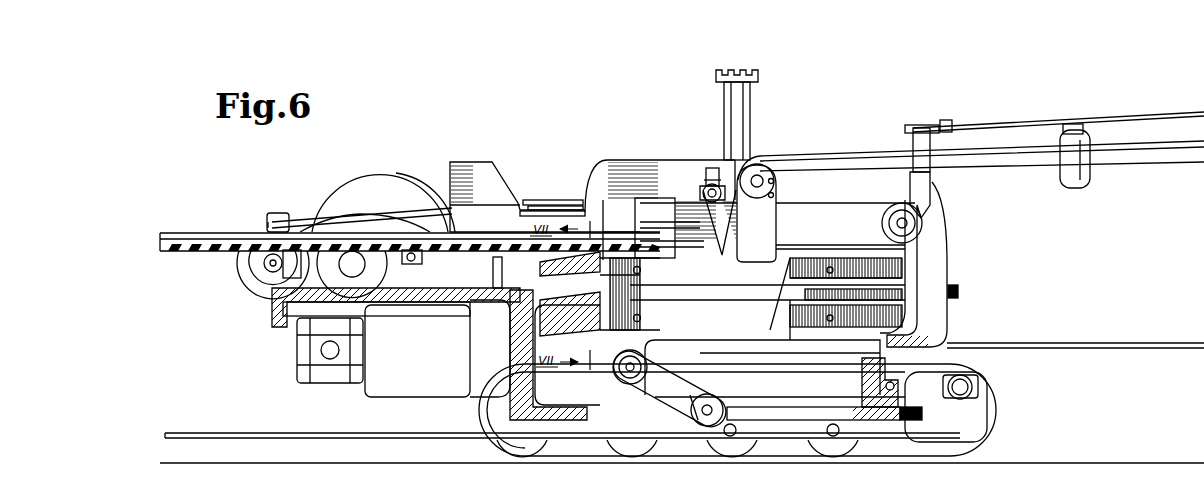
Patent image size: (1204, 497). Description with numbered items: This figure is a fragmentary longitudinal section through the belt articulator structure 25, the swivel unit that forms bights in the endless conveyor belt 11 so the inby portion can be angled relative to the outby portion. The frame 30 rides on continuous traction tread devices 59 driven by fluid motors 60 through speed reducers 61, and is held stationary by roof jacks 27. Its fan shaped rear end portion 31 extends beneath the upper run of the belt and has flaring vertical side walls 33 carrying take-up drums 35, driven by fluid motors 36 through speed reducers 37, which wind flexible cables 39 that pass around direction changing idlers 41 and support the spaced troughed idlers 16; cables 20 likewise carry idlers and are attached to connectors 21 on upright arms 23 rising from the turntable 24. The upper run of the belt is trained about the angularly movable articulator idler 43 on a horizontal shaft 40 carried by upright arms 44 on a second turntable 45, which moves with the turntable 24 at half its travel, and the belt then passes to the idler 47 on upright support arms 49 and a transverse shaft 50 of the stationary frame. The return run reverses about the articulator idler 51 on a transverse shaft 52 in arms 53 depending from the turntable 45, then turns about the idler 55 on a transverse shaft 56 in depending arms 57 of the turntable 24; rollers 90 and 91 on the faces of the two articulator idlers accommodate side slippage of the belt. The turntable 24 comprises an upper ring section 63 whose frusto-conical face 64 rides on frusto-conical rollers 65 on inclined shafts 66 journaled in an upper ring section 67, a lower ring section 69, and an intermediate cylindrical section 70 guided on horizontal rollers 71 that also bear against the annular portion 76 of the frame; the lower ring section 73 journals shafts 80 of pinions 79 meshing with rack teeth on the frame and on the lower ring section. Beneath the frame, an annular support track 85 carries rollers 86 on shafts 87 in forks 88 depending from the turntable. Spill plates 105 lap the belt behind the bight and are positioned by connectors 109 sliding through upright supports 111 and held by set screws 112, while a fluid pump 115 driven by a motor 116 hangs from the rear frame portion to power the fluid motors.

The endless conveyor belt 11 is at (1198, 163).
The troughed idlers 16 is at (1072, 190).
The cables 20 is at (993, 124).
The connectors 21 is at (914, 128).
The upright arms 23 is at (944, 218).
The turntable 24 is at (611, 340).
The belt articulator structure 25 is at (440, 158).
The roof jacks 27 is at (724, 103).
The frame 30 is at (961, 292).
The fan shaped rear end portion 31 is at (276, 310).
The flaring vertical side walls 33 is at (282, 213).
The take-up drums 35 is at (338, 205).
The fluid motors 36 is at (250, 265).
The speed reducers 37 is at (390, 266).
The flexible cables 39 is at (193, 232).
The horizontal shaft 40 is at (760, 180).
The direction changing idlers 41 is at (533, 200).
The articulator idler 43 is at (759, 165).
The upright arms 44 is at (760, 212).
The turntable 45 is at (903, 268).
The idler 47 is at (931, 207).
The upright support arms 49 is at (908, 238).
The transverse shaft 50 is at (898, 206).
The articulator idler 51 is at (710, 428).
The transverse shaft 52 is at (742, 427).
The arms 53 is at (726, 393).
The idler 55 is at (690, 396).
The transverse shaft 56 is at (638, 366).
The depending arms 57 is at (650, 350).
The continuous traction tread devices 59 is at (984, 433).
The fluid motors 60 is at (973, 408).
The speed reducers 61 is at (965, 389).
The upper ring section 63 is at (595, 258).
The annular frusto-conical face 64 is at (598, 263).
The frusto-conical rollers 65 is at (528, 252).
The shafts 66 is at (837, 262).
The upper ring section 67 is at (797, 265).
The lower ring section 69 is at (608, 319).
The intermediate cylindrical section 70 is at (641, 270).
The horizontal rollers 71 is at (605, 271).
The lower ring section 73 is at (790, 330).
The annular portion 76 is at (520, 321).
The pinions 79 is at (520, 337).
The shafts 80 is at (614, 300).
The annular support track 85 is at (796, 422).
The rollers 86 is at (873, 420).
The shafts 87 is at (897, 430).
The forks 88 is at (864, 350).
The rollers 90 is at (773, 194).
The rollers 91 is at (693, 424).
The spill plates 105 is at (482, 162).
The connectors 109 is at (713, 192).
The upright supports 111 is at (708, 212).
The set screws 112 is at (709, 168).
The fluid pump 115 is at (300, 386).
The motor 116 is at (418, 393).